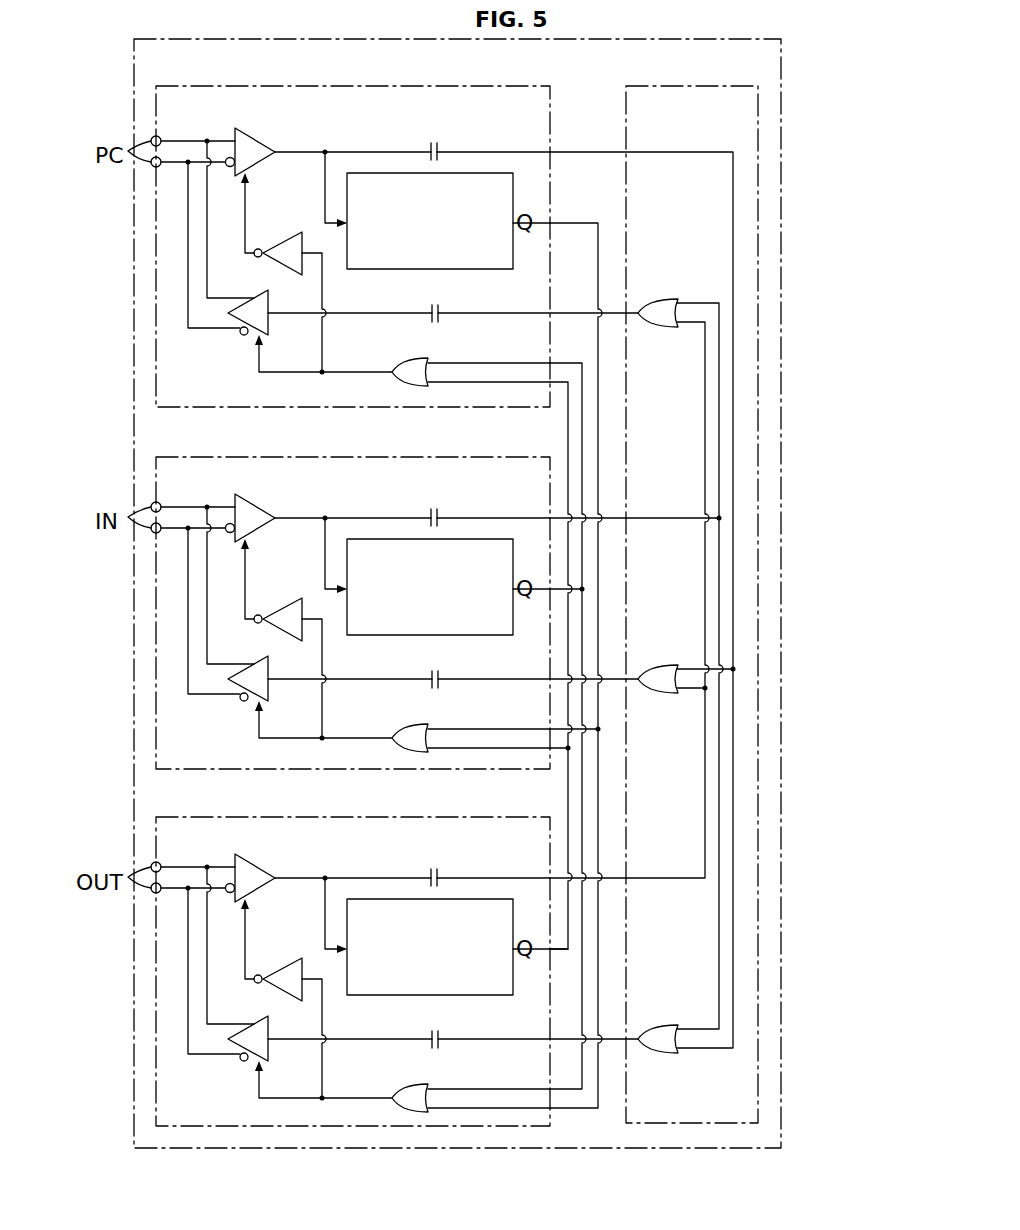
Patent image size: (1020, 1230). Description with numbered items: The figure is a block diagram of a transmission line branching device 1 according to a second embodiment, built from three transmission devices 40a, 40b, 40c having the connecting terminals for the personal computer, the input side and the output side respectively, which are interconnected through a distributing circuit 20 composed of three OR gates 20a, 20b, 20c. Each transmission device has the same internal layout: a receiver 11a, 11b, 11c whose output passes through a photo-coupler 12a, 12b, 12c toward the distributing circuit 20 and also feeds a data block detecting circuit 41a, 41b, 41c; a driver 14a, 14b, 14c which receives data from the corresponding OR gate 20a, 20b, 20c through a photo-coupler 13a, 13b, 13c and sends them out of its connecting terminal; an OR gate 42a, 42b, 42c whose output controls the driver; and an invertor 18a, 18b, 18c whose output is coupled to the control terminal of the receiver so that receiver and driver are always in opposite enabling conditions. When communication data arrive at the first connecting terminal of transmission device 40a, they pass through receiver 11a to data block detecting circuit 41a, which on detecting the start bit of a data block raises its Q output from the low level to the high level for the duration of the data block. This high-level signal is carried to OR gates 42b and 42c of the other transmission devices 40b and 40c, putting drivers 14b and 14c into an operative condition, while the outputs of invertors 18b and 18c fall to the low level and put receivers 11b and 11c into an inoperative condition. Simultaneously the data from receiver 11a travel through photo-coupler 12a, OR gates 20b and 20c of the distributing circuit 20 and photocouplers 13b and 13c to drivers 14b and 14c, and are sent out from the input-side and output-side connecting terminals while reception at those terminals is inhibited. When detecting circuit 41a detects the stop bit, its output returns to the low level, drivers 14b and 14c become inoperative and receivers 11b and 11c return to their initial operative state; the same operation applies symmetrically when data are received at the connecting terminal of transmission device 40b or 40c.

The transmission line branching device 1 is at (138, 38).
The distributing circuit 20 is at (627, 86).
The transmission device 40a is at (158, 86).
The transmission device 40b is at (158, 457).
The transmission device 40c is at (158, 817).
The receiver 11a is at (251, 138).
The receiver 11b is at (257, 505).
The receiver 11c is at (257, 865).
The photo-coupler 12a is at (440, 143).
The photo-coupler 12b is at (458, 499).
The photo-coupler 12c is at (457, 859).
The photo-coupler 13a is at (431, 306).
The photocoupler 13b is at (408, 664).
The photocoupler 13c is at (408, 1024).
The driver 14a is at (262, 296).
The driver 14b is at (242, 663).
The driver 14c is at (242, 1023).
The invertor 18a is at (284, 232).
The invertor 18b is at (278, 601).
The invertor 18c is at (278, 961).
The data block detecting circuit 41a is at (512, 270).
The data block detecting circuit 41b is at (430, 602).
The data block detecting circuit 41c is at (430, 962).
The OR gate 42a is at (393, 362).
The OR gate 42b is at (386, 721).
The OR gate 42c is at (386, 1081).
The OR gate 20a is at (659, 301).
The OR gate 20b is at (669, 659).
The OR gate 20c is at (668, 1019).